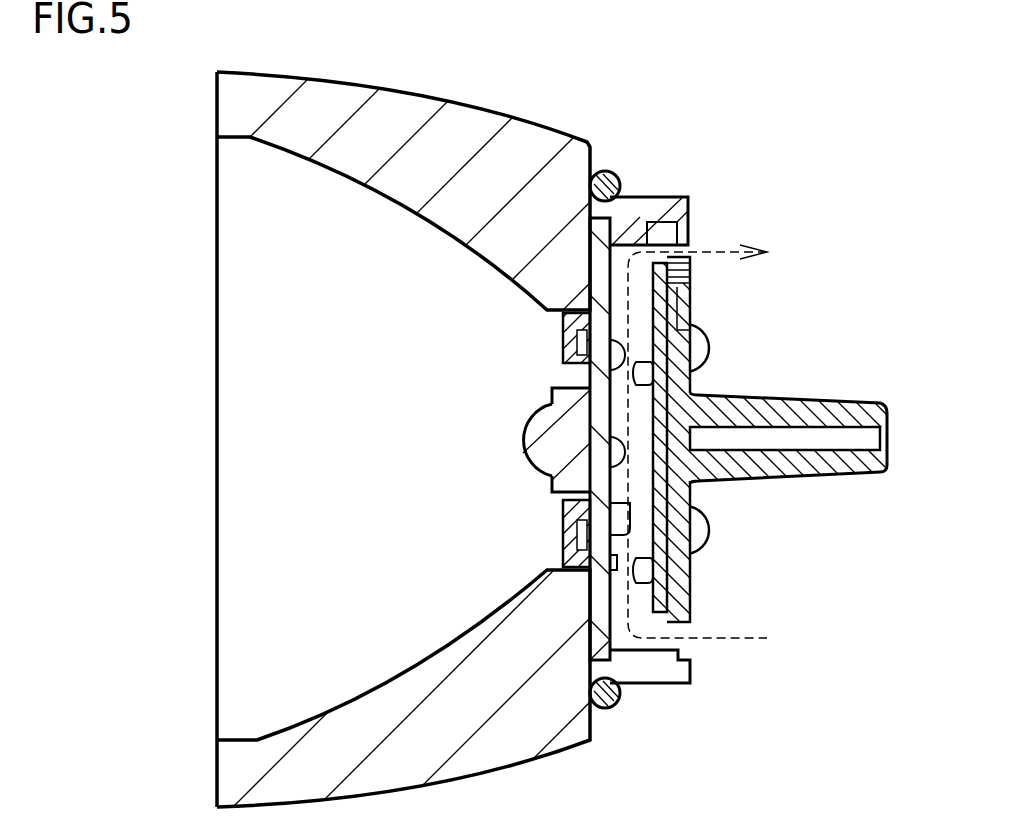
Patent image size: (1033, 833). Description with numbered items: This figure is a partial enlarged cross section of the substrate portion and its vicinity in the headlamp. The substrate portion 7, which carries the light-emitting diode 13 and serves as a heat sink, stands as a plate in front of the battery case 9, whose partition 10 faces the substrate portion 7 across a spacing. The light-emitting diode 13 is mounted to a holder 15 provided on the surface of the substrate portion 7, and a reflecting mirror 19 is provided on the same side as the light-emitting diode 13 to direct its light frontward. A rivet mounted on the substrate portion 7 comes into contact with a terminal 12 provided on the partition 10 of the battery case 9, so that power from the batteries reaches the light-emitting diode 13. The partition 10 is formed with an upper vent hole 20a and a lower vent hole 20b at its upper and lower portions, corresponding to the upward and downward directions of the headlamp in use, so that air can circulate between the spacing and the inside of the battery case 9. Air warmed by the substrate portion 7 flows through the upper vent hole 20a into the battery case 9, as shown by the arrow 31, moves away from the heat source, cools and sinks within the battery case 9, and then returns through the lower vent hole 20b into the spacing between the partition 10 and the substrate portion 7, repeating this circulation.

The substrate portion 7 is at (583, 277).
The battery case 9 is at (773, 360).
The partition 10 is at (683, 583).
The terminal 12 is at (641, 600).
The light-emitting diode 13 is at (523, 438).
The holder 15 is at (563, 342).
The reflecting mirror 19 is at (340, 177).
The upper vent hole 20a is at (690, 244).
The lower vent hole 20b is at (687, 647).
The arrow 31 is at (713, 259).